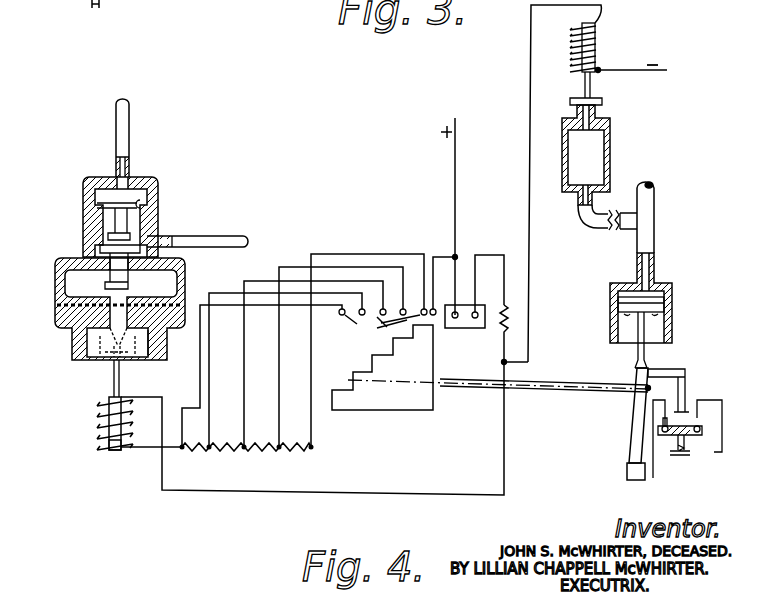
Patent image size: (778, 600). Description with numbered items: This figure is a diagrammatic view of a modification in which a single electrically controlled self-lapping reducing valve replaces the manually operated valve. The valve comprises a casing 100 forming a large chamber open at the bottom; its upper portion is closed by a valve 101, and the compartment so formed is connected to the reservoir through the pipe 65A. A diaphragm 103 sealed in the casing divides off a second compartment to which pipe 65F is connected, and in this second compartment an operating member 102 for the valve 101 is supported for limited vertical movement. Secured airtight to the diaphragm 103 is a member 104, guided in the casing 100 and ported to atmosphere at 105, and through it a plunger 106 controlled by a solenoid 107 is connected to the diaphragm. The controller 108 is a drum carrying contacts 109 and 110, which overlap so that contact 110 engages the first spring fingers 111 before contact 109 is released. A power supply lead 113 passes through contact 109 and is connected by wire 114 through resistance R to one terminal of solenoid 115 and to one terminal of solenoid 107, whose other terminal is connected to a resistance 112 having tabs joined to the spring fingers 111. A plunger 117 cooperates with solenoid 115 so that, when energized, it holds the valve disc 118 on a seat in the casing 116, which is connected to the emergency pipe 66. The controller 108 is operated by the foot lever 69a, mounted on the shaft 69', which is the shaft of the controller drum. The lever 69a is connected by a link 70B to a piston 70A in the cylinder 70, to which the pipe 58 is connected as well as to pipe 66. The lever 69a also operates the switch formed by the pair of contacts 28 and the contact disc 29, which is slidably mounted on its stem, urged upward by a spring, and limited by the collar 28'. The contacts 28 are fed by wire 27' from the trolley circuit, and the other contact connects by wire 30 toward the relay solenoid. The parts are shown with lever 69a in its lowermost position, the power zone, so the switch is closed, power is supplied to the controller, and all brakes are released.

The pipe 65A is at (131, 118).
The pipe 65F is at (227, 236).
The casing 100 is at (83, 237).
The valve 101 is at (145, 203).
The operating member 102 is at (118, 268).
The diaphragm 103 is at (65, 268).
The member 104 is at (95, 335).
The port to atmosphere 105 is at (163, 330).
The plunger 106 is at (111, 451).
The solenoid 107 is at (92, 420).
The controller 108 is at (445, 443).
The contact 109 is at (463, 329).
The contact 110 is at (375, 410).
The spring fingers 111 is at (387, 325).
The resistance 112 is at (265, 447).
The power supply lead 113 is at (456, 206).
The wire 114 is at (466, 494).
The solenoid 115 is at (598, 44).
The casing 116 is at (608, 155).
The plunger 117 is at (602, 6).
The valve disc 118 is at (594, 101).
The resistance R is at (512, 310).
The pipe 58 is at (656, 225).
The emergency pipe 66 is at (618, 229).
The cylinder 70 is at (673, 293).
The piston 70A is at (662, 305).
The link 70B is at (637, 351).
The shaft 69' is at (545, 395).
The foot lever 69a is at (635, 407).
The wire 27' is at (642, 452).
The collar 28' is at (693, 388).
The contacts 28 is at (707, 423).
The contact disc 29 is at (690, 435).
The wire 30 is at (722, 452).